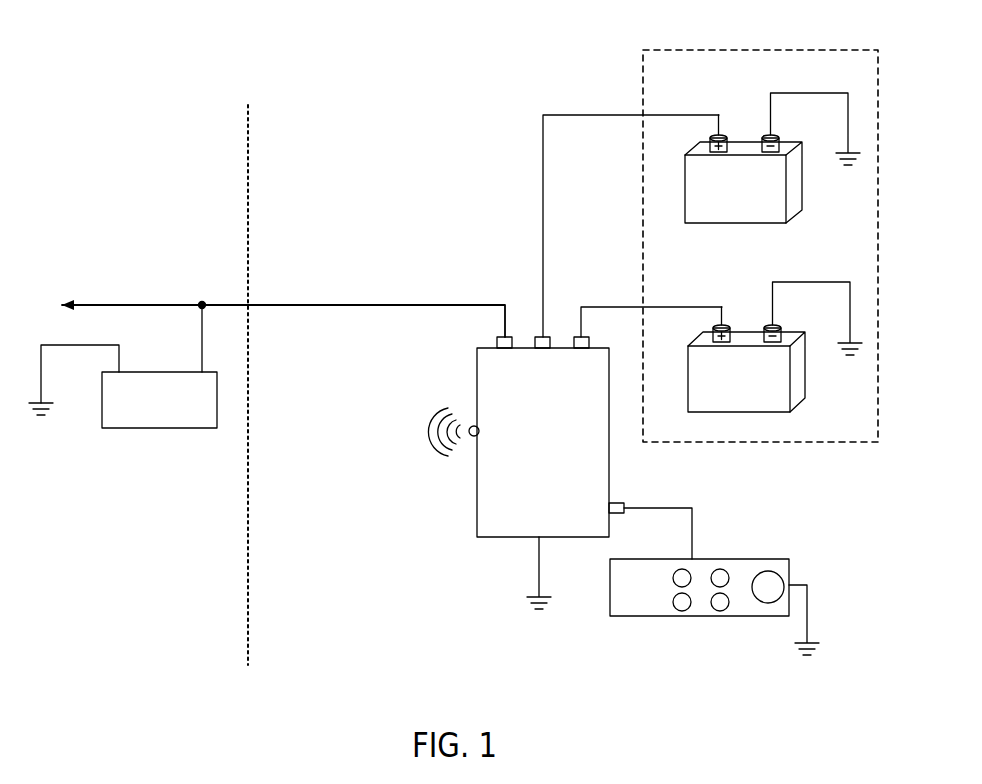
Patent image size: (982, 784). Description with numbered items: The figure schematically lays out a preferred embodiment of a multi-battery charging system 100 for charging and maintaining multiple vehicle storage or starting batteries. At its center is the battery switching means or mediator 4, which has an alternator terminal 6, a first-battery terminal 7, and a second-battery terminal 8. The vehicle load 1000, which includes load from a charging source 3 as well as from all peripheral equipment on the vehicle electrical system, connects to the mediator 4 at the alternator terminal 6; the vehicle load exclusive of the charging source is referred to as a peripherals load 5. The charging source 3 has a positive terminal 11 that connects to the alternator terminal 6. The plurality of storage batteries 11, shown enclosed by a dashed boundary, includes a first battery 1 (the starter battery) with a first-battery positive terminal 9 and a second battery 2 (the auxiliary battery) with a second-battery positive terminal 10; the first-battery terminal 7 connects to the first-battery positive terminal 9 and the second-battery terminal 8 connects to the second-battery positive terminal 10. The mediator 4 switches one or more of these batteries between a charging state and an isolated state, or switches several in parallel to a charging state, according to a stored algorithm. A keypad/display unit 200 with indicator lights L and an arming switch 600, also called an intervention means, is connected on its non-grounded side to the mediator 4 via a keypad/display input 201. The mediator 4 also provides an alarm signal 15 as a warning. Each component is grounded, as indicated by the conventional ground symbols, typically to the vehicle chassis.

The first battery 1 is at (772, 157).
The second battery 2 is at (775, 347).
The charging source 3 is at (123, 386).
The mediator 4 is at (543, 478).
The peripherals load 5 is at (275, 315).
The alternator terminal 6 is at (500, 336).
The first-battery terminal 7 is at (545, 337).
The second-battery terminal 8 is at (588, 337).
The first-battery positive terminal 9 is at (724, 134).
The second-battery positive terminal 10 is at (727, 326).
The plurality of storage batteries 11 is at (660, 72).
The alarm signal 15 is at (470, 437).
The multi-battery charging system 100 is at (522, 343).
The keypad/display unit 200 is at (699, 608).
The keypad/display input 201 is at (650, 515).
The arming switch 600 is at (767, 576).
The vehicle load 1000 is at (183, 385).
The indicator lights L is at (718, 606).